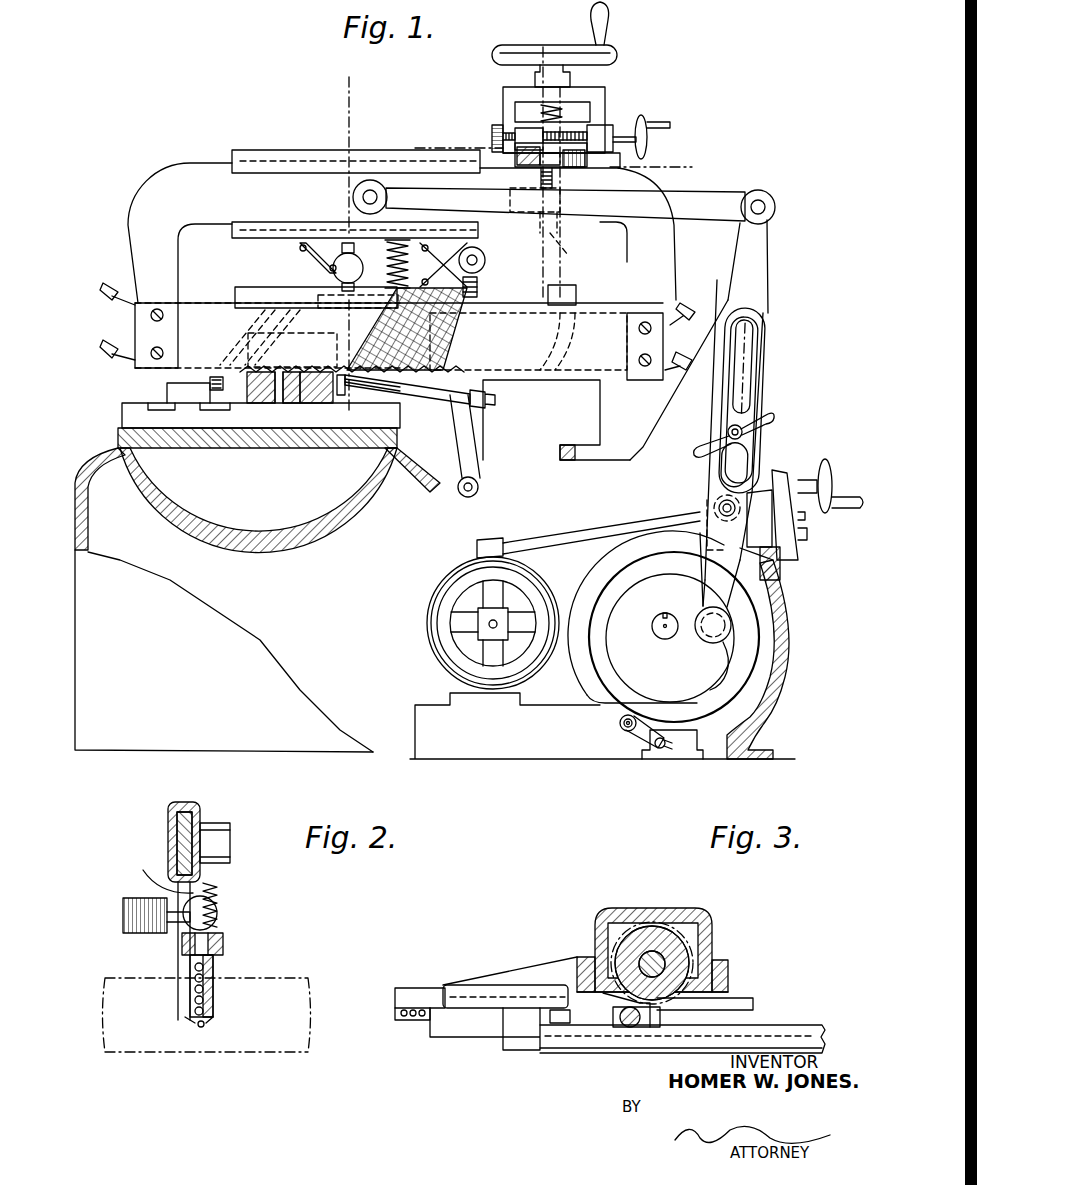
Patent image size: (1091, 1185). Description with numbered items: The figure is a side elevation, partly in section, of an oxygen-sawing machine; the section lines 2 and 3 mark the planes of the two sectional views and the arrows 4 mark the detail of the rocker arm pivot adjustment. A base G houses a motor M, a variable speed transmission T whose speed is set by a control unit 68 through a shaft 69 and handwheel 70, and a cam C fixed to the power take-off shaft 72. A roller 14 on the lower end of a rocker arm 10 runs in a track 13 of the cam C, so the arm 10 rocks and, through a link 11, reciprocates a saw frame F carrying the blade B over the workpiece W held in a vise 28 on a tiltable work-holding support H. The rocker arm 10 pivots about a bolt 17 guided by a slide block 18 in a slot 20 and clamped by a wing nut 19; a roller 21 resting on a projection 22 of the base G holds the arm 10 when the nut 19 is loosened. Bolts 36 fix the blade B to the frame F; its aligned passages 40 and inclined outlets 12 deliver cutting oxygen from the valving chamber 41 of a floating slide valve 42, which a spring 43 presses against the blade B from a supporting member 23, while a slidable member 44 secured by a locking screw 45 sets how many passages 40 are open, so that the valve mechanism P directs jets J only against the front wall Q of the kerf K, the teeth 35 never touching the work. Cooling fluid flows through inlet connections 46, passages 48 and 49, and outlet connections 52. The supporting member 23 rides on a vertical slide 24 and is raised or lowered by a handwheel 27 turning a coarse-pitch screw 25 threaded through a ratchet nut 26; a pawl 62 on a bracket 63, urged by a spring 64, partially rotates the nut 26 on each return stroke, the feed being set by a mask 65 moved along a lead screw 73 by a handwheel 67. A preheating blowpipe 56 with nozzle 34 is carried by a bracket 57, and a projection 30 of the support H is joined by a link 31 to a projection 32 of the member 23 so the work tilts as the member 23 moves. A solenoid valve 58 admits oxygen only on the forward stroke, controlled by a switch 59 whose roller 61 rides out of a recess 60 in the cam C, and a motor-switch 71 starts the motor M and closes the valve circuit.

In FIG. 1, the section line 2— 2 is at (364, 414).
In FIG. 1, the section line 3— 3 is at (691, 160).
In FIG. 1, the view arrows 4— 4 is at (740, 320).
In FIG. 1, the rocker arm 10 is at (778, 291).
In FIG. 1, the link 11 is at (745, 190).
In FIG. 2, the link 11 is at (218, 823).
In FIG. 3, the link 11 is at (822, 1032).
In FIG. 2, the outwardly inclined oxygen outlets 12 is at (213, 1020).
In FIG. 1, the groove or track 13 is at (590, 606).
In FIG. 1, the roller 14 is at (730, 620).
In FIG. 1, the bolt 17 is at (727, 431).
In FIG. 1, the slide block 18 is at (748, 440).
In FIG. 1, the wing nut 19 is at (772, 418).
In FIG. 1, the slot 20 is at (752, 392).
In FIG. 1, the roller 21 is at (712, 505).
In FIG. 1, the projection 22 is at (770, 478).
In FIG. 1, the supporting member 23 is at (605, 253).
In FIG. 2, the supporting member 23 is at (166, 798).
In FIG. 3, the supporting member 23 is at (505, 985).
In FIG. 1, the vertical slide 24 is at (605, 88).
In FIG. 3, the vertical slide 24 is at (622, 910).
In FIG. 1, the coarse-pitch screw 25 is at (562, 300).
In FIG. 3, the coarse-pitch screw 25 is at (665, 960).
In FIG. 1, the ratchet nut 26 is at (607, 160).
In FIG. 3, the ratchet nut 26 is at (680, 942).
In FIG. 1, the handwheel 27 is at (604, 52).
In FIG. 1, the clamp or vise 28 is at (250, 403).
In FIG. 1, the projection 30 is at (464, 496).
In FIG. 1, the link 31 is at (500, 425).
In FIG. 1, the projection 32 is at (485, 260).
In FIG. 1, the preheating nozzle 34 is at (345, 393).
In FIG. 1, the teeth 35 is at (278, 403).
In FIG. 2, the teeth 35 is at (215, 1022).
In FIG. 1, the bolts 36 is at (648, 370).
In FIG. 1, the aligned passages 40 is at (455, 350).
In FIG. 2, the aligned passages 40 is at (212, 968).
In FIG. 3, the aligned passages 40 is at (400, 988).
In FIG. 1, the valving chamber 41 is at (465, 243).
In FIG. 2, the valving chamber 41 is at (185, 945).
In FIG. 1, the floating slide valve 42 is at (248, 287).
In FIG. 2, the floating slide valve 42 is at (210, 955).
In FIG. 3, the floating slide valve 42 is at (465, 1037).
In FIG. 1, the spring 43 is at (395, 245).
In FIG. 2, the spring 43 is at (220, 896).
In FIG. 1, the slidable member 44 is at (555, 285).
In FIG. 2, the slidable member 44 is at (220, 940).
In FIG. 3, the slidable member 44 is at (655, 1005).
In FIG. 1, the locking screw 45 is at (478, 285).
In FIG. 3, the locking screw 45 is at (562, 1025).
In FIG. 1, the inlet connections 46 is at (692, 303).
In FIG. 1, the passages 48 is at (570, 330).
In FIG. 1, the passages 49 is at (195, 303).
In FIG. 1, the outlet connections 52 is at (700, 370).
In FIG. 1, the preheating blowpipe 56 is at (398, 400).
In FIG. 2, the preheating blowpipe 56 is at (201, 1028).
In FIG. 1, the bracket 57 is at (428, 395).
In FIG. 1, the solenoid valve 58 is at (340, 260).
In FIG. 2, the solenoid valve 58 is at (215, 913).
In FIG. 1, the switch 59 is at (688, 752).
In FIG. 1, the recess 60 is at (617, 718).
In FIG. 1, the roller 61 is at (625, 739).
In FIG. 1, the pawl 62 is at (560, 158).
In FIG. 3, the pawl 62 is at (645, 1027).
In FIG. 1, the bracket 63 is at (543, 214).
In FIG. 1, the spring 64 is at (540, 177).
In FIG. 3, the spring 64 is at (630, 1027).
In FIG. 1, the mask 65 is at (528, 152).
In FIG. 3, the mask 65 is at (625, 1000).
In FIG. 1, the handwheel 67 is at (670, 124).
In FIG. 1, the control unit 68 is at (476, 547).
In FIG. 1, the shaft 69 is at (580, 542).
In FIG. 1, the handwheel 70 is at (830, 470).
In FIG. 1, the motor-switch 71 is at (808, 535).
In FIG. 1, the power take-off shaft 72 is at (667, 639).
In FIG. 1, the horizontal lead screw 73 is at (495, 128).
In FIG. 1, the blade or headpiece B is at (663, 337).
In FIG. 2, the blade or headpiece B is at (226, 1000).
In FIG. 3, the blade or headpiece B is at (386, 1018).
In FIG. 1, the cam C is at (760, 628).
In FIG. 1, the saw frame F is at (680, 262).
In FIG. 2, the saw frame F is at (175, 842).
In FIG. 3, the saw frame F is at (755, 1002).
In FIG. 1, the base G is at (510, 482).
In FIG. 1, the work-holding support H is at (275, 549).
In FIG. 1, the flame-cutting jets J is at (320, 368).
In FIG. 2, the kerf K is at (190, 999).
In FIG. 1, the motor M is at (427, 642).
In FIG. 1, the valve mechanism P is at (318, 288).
In FIG. 1, the advancing edge or front wall of the kerf Q is at (326, 403).
In FIG. 1, the variable speed transmission T is at (553, 700).
In FIG. 1, the workpiece W is at (318, 403).
In FIG. 2, the workpiece W is at (225, 1052).